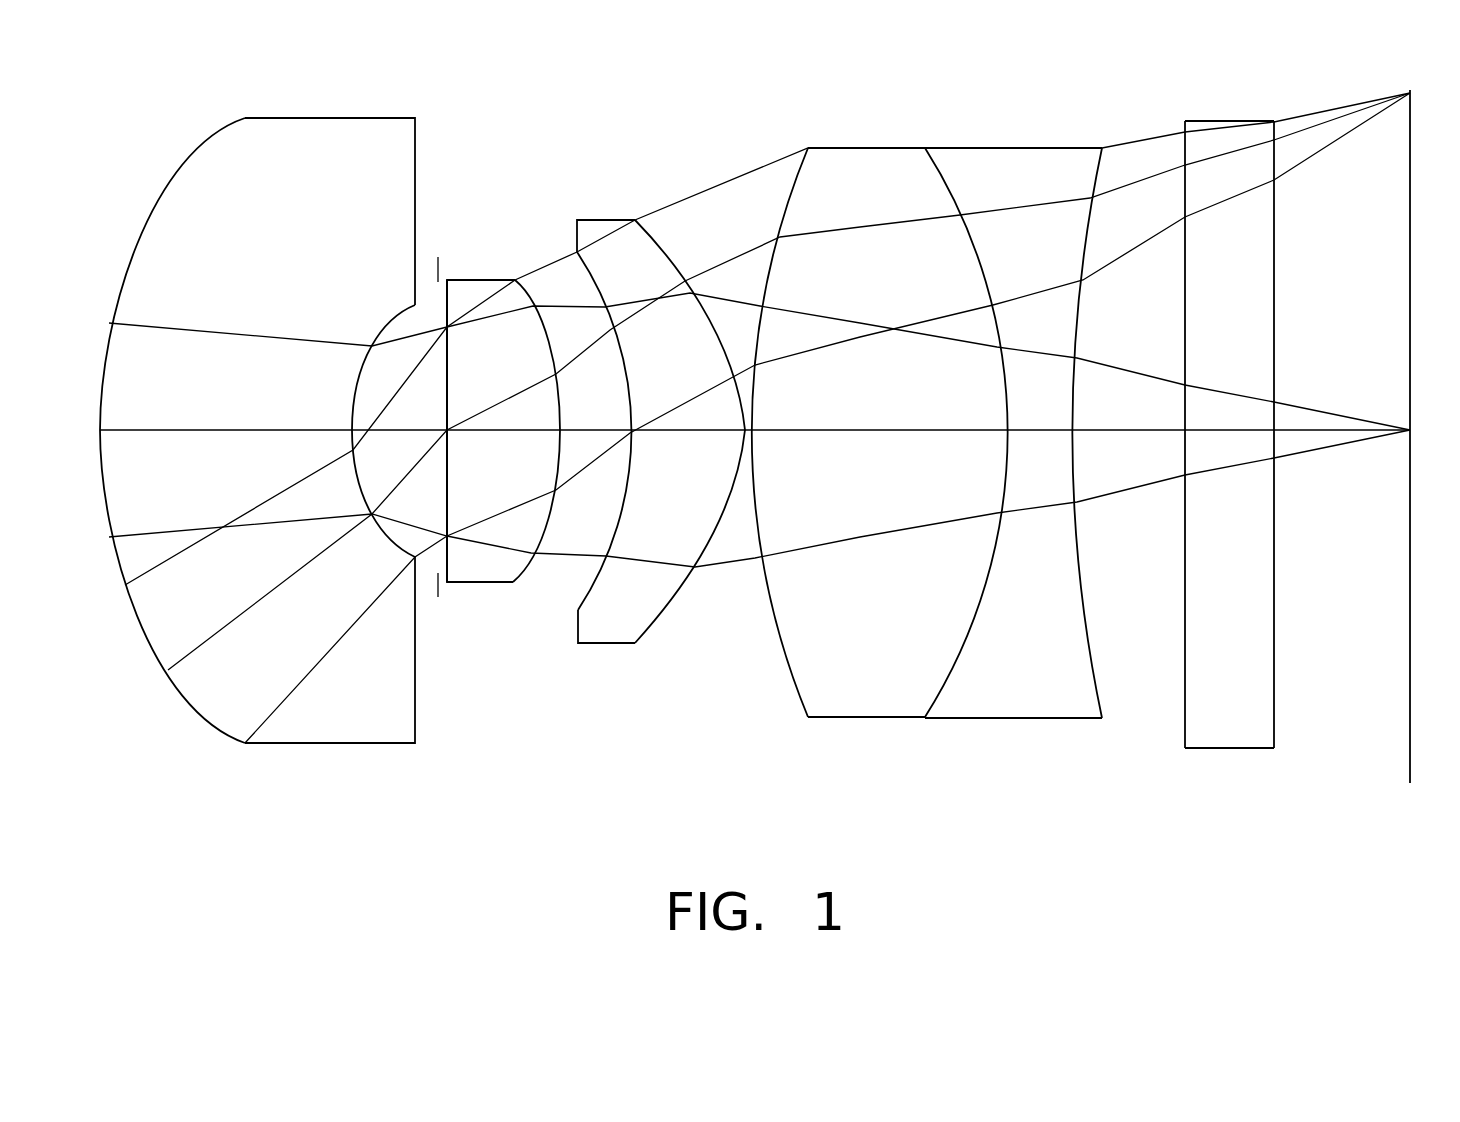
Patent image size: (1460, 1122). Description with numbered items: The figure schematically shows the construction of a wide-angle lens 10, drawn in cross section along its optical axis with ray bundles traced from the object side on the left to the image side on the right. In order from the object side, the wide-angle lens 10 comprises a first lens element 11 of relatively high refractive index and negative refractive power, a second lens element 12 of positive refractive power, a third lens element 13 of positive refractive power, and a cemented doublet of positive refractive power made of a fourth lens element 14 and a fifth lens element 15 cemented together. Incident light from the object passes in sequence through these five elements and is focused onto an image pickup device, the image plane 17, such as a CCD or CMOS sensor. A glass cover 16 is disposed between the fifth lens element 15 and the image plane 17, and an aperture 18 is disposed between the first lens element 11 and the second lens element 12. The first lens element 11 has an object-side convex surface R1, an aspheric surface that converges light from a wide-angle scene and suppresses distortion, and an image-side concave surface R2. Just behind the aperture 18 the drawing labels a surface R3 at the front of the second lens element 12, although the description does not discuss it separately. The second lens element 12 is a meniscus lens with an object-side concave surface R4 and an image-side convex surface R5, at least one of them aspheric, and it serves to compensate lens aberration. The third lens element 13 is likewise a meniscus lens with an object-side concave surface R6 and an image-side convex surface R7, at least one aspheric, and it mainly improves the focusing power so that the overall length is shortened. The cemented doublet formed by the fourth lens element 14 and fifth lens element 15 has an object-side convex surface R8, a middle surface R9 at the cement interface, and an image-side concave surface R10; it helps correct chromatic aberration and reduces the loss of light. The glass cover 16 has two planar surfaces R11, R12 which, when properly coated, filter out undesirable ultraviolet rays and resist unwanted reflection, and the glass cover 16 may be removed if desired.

The wide-angle lens 10 is at (777, 451).
The first lens element 11 is at (268, 459).
The second lens element 12 is at (496, 507).
The third lens element 13 is at (654, 479).
The fourth lens element 14 is at (880, 442).
The fifth lens element 15 is at (1032, 431).
The glass cover 16 is at (1235, 460).
The image plane 17 is at (1410, 130).
The aperture 18 is at (433, 262).
The object-side convex surface R1 is at (192, 700).
The image-side concave surface R2 is at (415, 717).
The object-side surface of second lens R3 is at (432, 610).
The object-side concave surface R4 is at (450, 560).
The image-side convex surface R5 is at (523, 570).
The object-side concave surface R6 is at (587, 588).
The image-side convex surface R7 is at (660, 615).
The object-side convex surface R8 is at (797, 685).
The middle surface R9 is at (955, 667).
The image-side concave surface R10 is at (1093, 660).
The planar surface R11 is at (1187, 710).
The planar surface R12 is at (1275, 690).